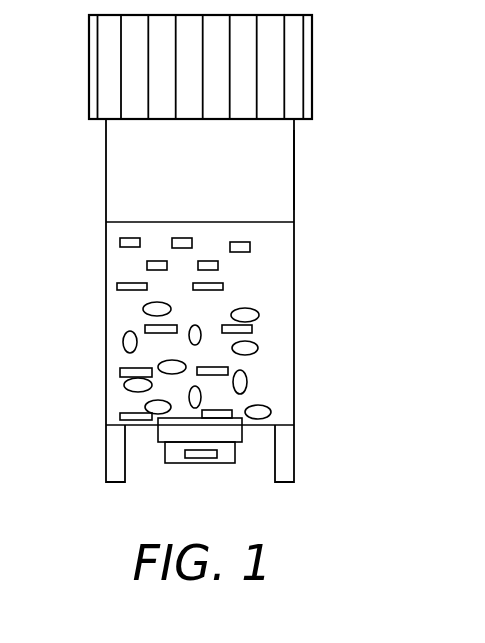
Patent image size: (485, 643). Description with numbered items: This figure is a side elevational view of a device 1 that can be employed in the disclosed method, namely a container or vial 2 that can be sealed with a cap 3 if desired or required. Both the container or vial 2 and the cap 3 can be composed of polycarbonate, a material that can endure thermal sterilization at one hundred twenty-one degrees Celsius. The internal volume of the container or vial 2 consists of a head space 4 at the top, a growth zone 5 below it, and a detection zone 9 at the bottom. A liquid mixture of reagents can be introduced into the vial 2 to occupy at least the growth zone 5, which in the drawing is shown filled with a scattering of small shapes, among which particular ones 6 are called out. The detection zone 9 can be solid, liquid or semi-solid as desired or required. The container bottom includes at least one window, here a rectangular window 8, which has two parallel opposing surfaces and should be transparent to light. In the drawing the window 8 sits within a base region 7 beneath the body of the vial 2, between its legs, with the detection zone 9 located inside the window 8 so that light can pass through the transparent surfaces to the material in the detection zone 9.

The pest control device 1 is at (216, 264).
The container or vial 2 is at (112, 187).
The cap 3 is at (91, 66).
The head space 4 is at (282, 178).
The growth zone 5 is at (282, 270).
The active ingredient particles 6 is at (259, 315).
The base plate 7 is at (159, 442).
The rectangular window 8 is at (236, 452).
The detection zone 9 is at (203, 459).